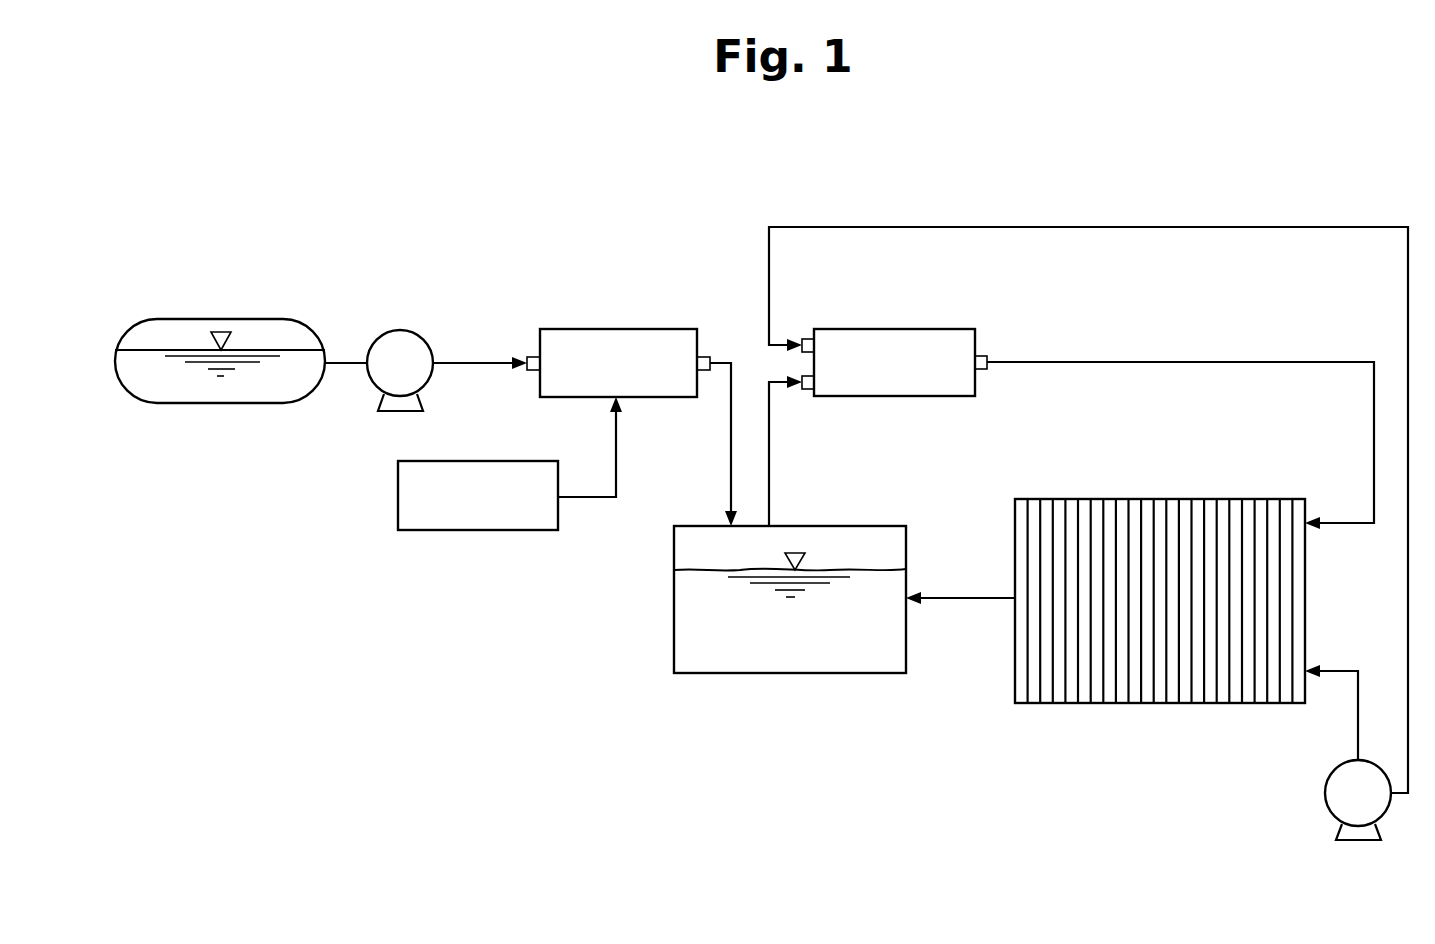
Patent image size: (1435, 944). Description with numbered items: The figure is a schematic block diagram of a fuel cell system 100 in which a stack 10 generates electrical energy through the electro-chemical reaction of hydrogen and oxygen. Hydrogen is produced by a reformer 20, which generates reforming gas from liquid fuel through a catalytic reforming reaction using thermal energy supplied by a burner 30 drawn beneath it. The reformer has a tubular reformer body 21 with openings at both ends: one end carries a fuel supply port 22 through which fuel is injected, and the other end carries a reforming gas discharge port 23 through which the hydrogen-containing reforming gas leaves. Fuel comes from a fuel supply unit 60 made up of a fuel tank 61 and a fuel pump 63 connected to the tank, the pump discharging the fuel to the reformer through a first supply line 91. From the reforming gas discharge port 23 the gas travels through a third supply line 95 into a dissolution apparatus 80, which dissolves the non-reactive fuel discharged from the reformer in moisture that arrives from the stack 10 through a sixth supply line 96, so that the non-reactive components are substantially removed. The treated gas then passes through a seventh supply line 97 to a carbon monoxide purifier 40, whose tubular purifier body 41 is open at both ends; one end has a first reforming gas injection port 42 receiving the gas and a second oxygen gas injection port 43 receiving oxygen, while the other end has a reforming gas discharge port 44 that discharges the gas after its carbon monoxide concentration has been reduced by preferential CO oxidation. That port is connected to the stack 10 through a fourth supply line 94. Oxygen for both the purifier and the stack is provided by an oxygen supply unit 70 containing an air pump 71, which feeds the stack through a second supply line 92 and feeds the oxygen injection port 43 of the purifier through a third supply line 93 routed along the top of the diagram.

The fuel cell system 100 is at (757, 157).
The stack 10 is at (1090, 728).
The reformer 20 is at (545, 295).
The reformer body 21 is at (650, 329).
The fuel supply port 22 is at (530, 355).
The reforming gas discharge port 23 is at (706, 355).
The burner 30 is at (508, 461).
The carbon monoxide purifier 40 is at (860, 298).
The purifier body 41 is at (905, 329).
The first reforming gas injection port 42 is at (808, 390).
The second oxygen gas injection port 43 is at (806, 338).
The reforming gas discharge port 44 is at (985, 355).
The fuel supply unit 60 is at (290, 470).
The fuel tank 61 is at (170, 403).
The fuel pump 63 is at (413, 330).
The oxygen supply unit 70 is at (1312, 824).
The air pump 71 is at (1368, 760).
The dissolution apparatus 80 is at (652, 569).
The first supply line 91 is at (457, 360).
The second supply line 92 is at (1340, 671).
The third supply line 93 is at (1250, 227).
The fourth supply line 94 is at (1210, 361).
The third supply line 95 is at (731, 443).
The sixth supply line 96 is at (947, 598).
The seventh supply line 97 is at (769, 452).